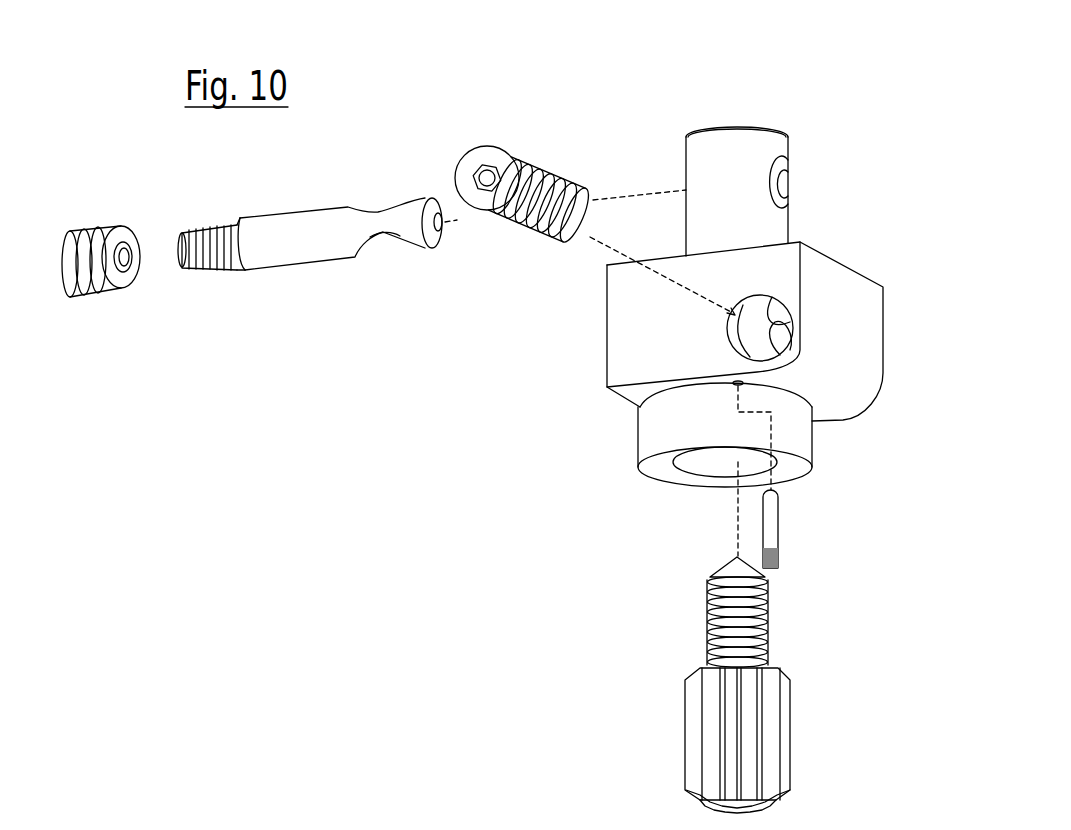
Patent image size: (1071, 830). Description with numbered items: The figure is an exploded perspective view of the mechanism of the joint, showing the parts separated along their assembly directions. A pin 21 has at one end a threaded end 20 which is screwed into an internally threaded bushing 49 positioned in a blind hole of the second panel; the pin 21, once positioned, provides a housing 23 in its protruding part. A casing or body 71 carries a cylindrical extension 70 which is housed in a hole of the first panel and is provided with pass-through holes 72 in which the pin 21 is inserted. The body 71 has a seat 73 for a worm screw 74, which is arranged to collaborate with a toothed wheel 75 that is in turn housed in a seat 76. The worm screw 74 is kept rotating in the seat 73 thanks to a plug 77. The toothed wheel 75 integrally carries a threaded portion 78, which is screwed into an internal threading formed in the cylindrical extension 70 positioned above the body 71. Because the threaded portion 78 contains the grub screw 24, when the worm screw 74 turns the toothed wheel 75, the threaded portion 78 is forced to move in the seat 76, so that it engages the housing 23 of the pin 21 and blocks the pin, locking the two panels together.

The internally threaded bushing 49 is at (100, 282).
The threaded end 20 is at (213, 270).
The pin 21 is at (295, 267).
The housing 23 is at (377, 245).
The worm screw 74 is at (532, 223).
The cylindrical extension 70 is at (697, 153).
The pass-through holes 72 is at (780, 180).
The body 71 is at (660, 332).
The seat 73 is at (773, 310).
The seat 76 is at (715, 478).
The plug 77 is at (763, 512).
The grub screw 24 is at (733, 567).
The threaded portion 78 is at (707, 608).
The toothed wheel 75 is at (687, 703).